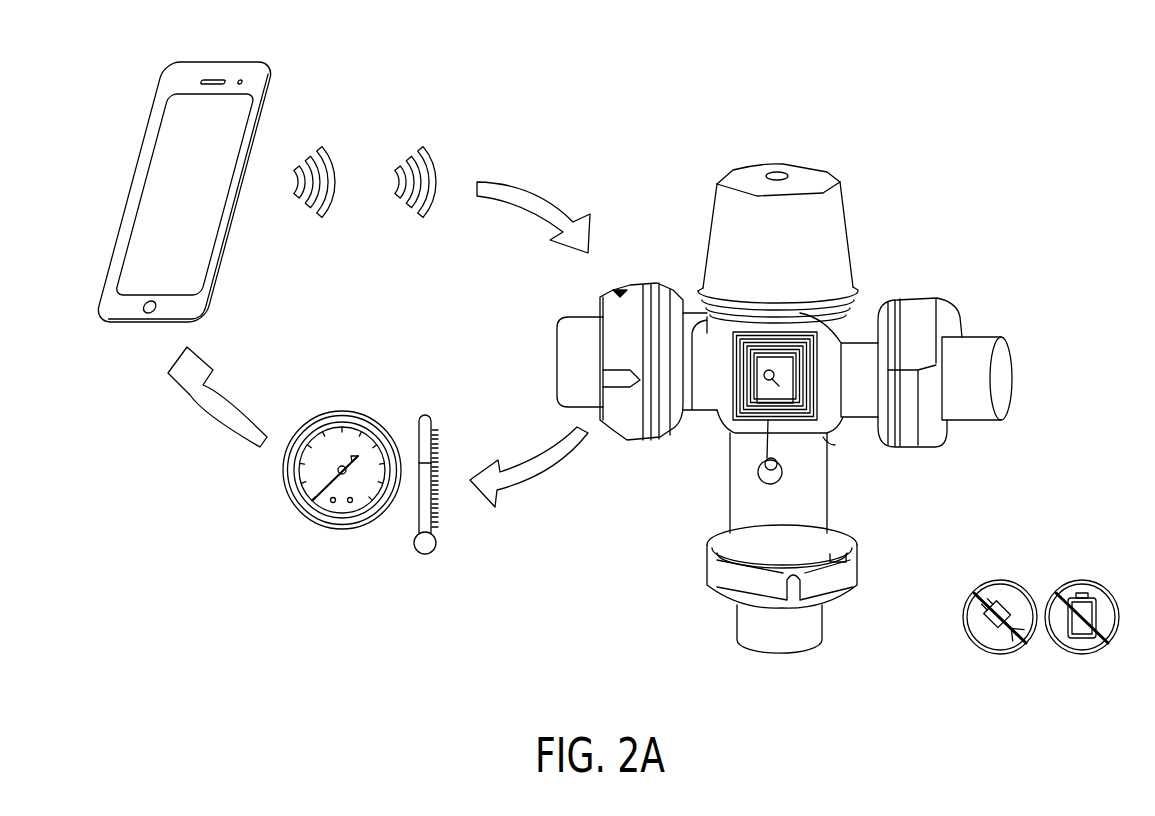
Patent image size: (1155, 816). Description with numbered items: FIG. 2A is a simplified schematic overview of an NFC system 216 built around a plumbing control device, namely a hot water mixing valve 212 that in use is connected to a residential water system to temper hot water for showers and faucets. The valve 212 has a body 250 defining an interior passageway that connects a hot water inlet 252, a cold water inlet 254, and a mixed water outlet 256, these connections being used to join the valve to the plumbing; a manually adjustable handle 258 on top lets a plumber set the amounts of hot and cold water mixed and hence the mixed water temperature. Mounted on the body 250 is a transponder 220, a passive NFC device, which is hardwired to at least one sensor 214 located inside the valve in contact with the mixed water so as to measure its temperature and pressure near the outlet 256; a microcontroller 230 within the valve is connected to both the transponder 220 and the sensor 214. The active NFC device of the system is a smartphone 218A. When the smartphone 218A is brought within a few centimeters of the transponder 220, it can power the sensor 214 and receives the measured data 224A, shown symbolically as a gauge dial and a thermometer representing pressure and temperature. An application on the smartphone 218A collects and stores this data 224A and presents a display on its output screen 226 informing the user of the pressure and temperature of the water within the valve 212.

The hot water mixing valve 212 is at (756, 413).
The sensor 214 is at (780, 480).
The NFC system 216 is at (503, 140).
The smartphone 218A is at (216, 183).
The transponder 220 is at (845, 328).
The data 224A is at (377, 543).
The output screen 226 is at (153, 197).
The microcontroller 230 is at (829, 437).
The body 250 is at (717, 422).
The hot water inlet 252 is at (570, 367).
The cold water inlet 254 is at (972, 422).
The mixed water outlet 256 is at (813, 630).
The manually adjustable handle 258 is at (722, 238).